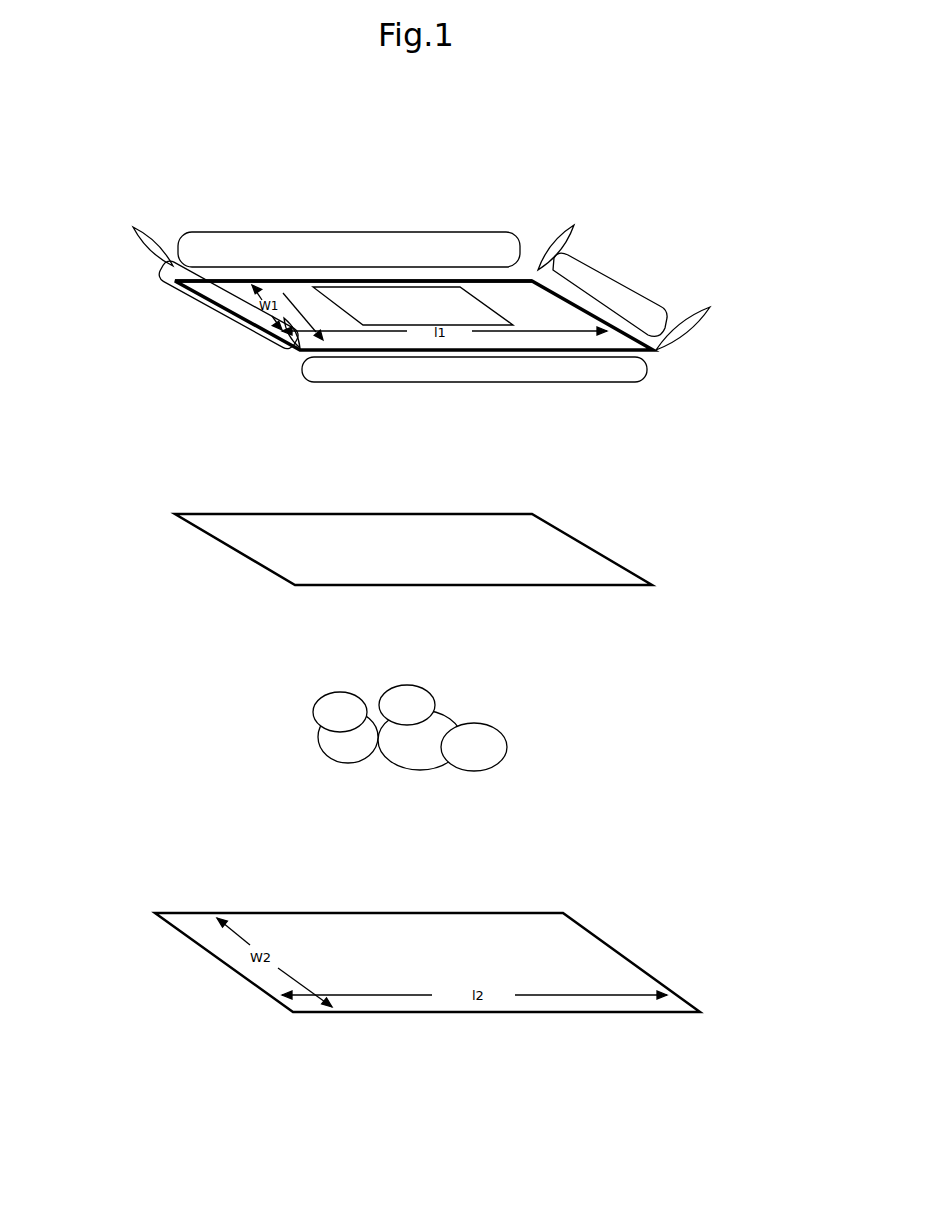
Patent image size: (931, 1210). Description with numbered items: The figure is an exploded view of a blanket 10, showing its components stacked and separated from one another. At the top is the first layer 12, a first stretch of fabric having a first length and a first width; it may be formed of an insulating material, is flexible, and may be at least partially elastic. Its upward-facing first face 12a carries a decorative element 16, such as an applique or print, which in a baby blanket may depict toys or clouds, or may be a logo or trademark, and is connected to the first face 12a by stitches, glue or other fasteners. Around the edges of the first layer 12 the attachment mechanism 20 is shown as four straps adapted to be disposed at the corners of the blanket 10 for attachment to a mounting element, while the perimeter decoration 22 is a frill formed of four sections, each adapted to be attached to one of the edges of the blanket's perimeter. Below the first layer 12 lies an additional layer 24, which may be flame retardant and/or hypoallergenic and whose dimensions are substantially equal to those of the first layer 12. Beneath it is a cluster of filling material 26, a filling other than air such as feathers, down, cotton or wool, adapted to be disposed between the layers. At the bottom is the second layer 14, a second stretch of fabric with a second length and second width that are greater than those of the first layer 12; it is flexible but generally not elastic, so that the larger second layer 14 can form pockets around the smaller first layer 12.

The blanket 10 is at (735, 127).
The first layer 12 is at (414, 262).
The first face 12a is at (353, 235).
The second layer 14 is at (592, 958).
The decorative element 16 is at (413, 261).
The attachment mechanism 20 is at (152, 250).
The perimeter decoration 22 is at (448, 252).
The additional layer 24 is at (540, 542).
The filling material 26 is at (492, 752).